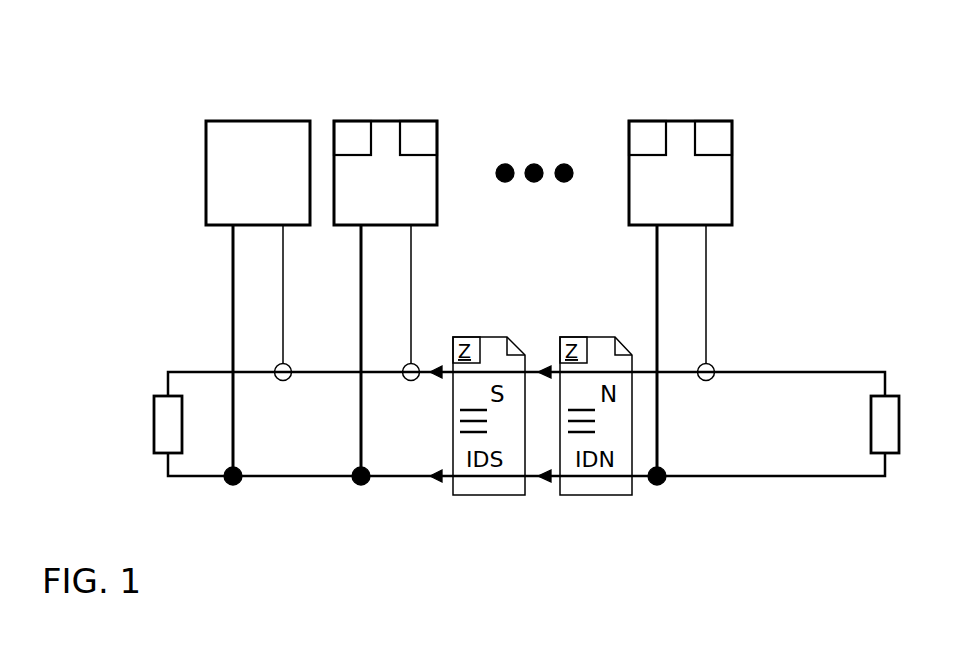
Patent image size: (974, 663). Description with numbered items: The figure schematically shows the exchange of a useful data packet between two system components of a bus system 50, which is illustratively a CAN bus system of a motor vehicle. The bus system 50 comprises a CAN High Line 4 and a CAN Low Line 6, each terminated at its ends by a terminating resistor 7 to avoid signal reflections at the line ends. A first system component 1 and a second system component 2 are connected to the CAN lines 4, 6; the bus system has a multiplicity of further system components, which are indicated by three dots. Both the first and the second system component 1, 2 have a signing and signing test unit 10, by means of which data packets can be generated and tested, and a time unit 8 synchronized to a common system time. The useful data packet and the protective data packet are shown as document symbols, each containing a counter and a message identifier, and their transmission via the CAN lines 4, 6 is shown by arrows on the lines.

The bus system 50 is at (814, 49).
The first system component 1 is at (680, 173).
The second system component 2 is at (385, 173).
The signing and signing test unit 10 is at (500, 138).
The time unit 8 is at (566, 138).
The CAN High Line 4 is at (791, 371).
The CAN Low Line 6 is at (802, 476).
The terminating resistor 7 is at (164, 420).